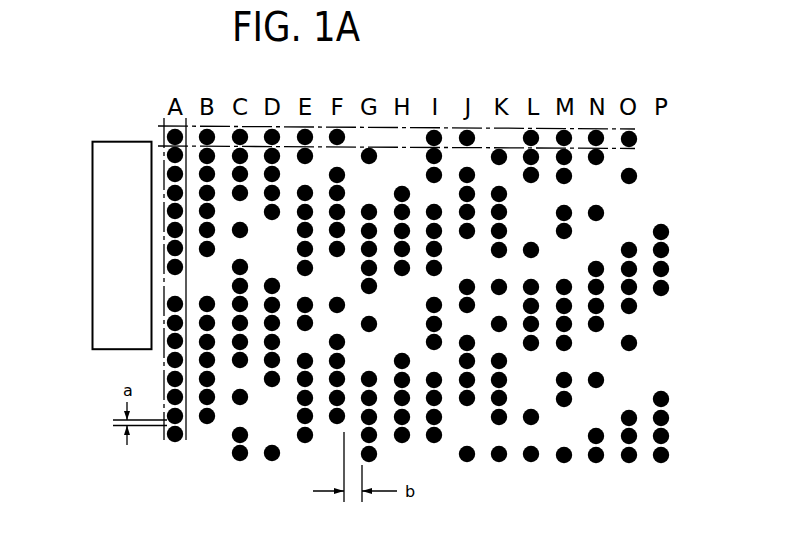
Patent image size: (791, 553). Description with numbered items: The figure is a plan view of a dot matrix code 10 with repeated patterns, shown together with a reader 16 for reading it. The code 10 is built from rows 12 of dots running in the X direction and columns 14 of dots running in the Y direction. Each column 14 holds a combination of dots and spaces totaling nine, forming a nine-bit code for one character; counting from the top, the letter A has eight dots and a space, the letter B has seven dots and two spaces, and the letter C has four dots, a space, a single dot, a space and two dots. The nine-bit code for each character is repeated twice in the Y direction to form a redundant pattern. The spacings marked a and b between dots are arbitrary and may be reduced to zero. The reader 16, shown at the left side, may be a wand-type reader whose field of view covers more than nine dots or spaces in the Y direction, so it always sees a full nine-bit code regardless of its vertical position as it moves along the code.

The dot matrix code 10 is at (318, 443).
The rows of dots 12 is at (636, 141).
The columns of dots 14 is at (173, 438).
The reader 16 is at (97, 299).